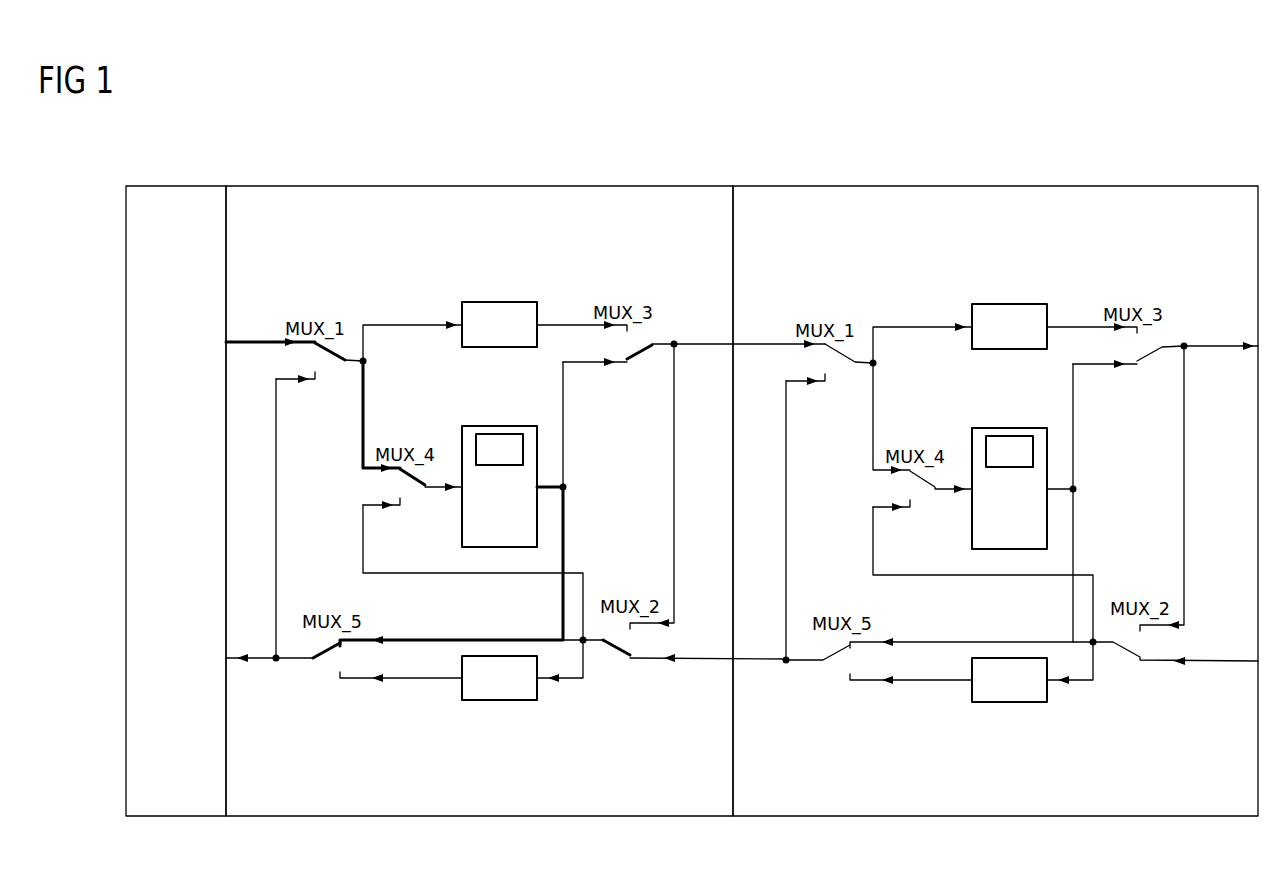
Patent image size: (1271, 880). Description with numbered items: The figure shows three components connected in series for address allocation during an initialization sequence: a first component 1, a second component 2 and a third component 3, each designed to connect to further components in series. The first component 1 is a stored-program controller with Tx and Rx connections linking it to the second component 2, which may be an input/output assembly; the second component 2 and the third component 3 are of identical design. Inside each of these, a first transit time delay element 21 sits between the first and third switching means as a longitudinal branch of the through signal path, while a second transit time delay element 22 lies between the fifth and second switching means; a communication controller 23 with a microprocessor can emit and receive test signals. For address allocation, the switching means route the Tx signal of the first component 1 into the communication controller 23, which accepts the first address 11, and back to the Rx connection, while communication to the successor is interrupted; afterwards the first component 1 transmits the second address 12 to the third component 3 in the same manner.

The first component 1 is at (183, 187).
The second component 2 is at (440, 187).
The third component 3 is at (906, 187).
The first address 11 is at (500, 465).
The second address 12 is at (1010, 467).
The first transit time delay element 21 is at (500, 302).
The second transit time delay element 22 is at (500, 700).
The communication controller 23 is at (500, 431).